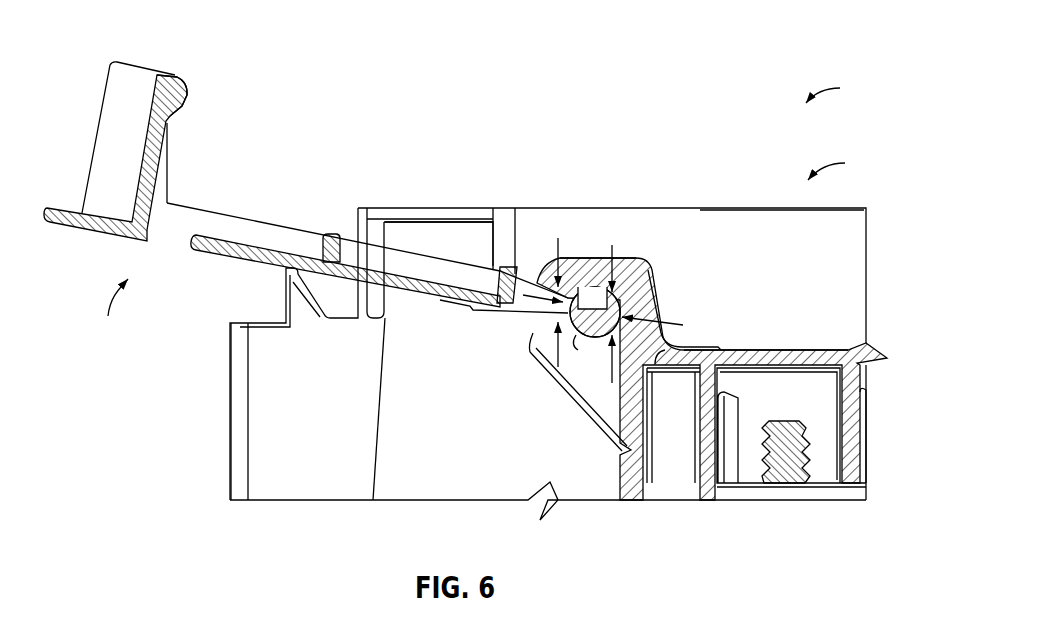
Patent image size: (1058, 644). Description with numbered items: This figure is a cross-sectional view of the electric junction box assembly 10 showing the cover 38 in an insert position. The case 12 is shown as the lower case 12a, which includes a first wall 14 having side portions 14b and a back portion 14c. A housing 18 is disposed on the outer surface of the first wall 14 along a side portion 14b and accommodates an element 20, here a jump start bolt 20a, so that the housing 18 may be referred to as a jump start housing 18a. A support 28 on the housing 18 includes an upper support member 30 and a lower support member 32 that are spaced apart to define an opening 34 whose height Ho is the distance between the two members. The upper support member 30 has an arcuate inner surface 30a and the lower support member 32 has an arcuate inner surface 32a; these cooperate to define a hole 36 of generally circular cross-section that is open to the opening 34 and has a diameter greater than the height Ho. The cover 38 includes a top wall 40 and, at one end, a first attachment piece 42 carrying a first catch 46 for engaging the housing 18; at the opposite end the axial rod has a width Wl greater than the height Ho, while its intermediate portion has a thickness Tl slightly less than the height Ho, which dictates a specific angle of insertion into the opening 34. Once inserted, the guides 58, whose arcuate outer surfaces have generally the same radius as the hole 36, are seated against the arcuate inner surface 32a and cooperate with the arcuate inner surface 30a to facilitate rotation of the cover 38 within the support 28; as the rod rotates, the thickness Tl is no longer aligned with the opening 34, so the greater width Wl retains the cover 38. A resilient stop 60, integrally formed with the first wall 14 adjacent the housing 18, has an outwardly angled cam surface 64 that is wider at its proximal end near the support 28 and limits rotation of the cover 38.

The electric junction box assembly 10 is at (839, 87).
The case 12 is at (867, 166).
The lower case 12a is at (867, 166).
The first wall 14 is at (850, 248).
The side portion 14b is at (793, 271).
The back portion 14c is at (227, 441).
The housing 18 is at (804, 393).
The jump start housing 18a is at (833, 337).
The element 20 is at (760, 386).
The jump start bolt 20a is at (787, 422).
The support 28 is at (518, 360).
The upper support member 30 is at (628, 277).
The arcuate inner surface of upper support member 30a is at (601, 262).
The lower support member 32 is at (543, 351).
The arcuate inner surface of lower support member 32a is at (598, 362).
The opening 34 is at (523, 315).
The hole 36 is at (589, 290).
The cover 38 is at (111, 314).
The top wall 40 is at (207, 250).
The first attachment piece 42 is at (103, 98).
The first catch 46 is at (178, 88).
The guide 58 is at (523, 263).
The resilient stop 60 is at (402, 208).
The cam surface 64 is at (462, 242).
The height of the opening Ho is at (557, 250).
The thickness of the intermediate portion Tl is at (592, 355).
The width of the axial rod Wl is at (683, 326).